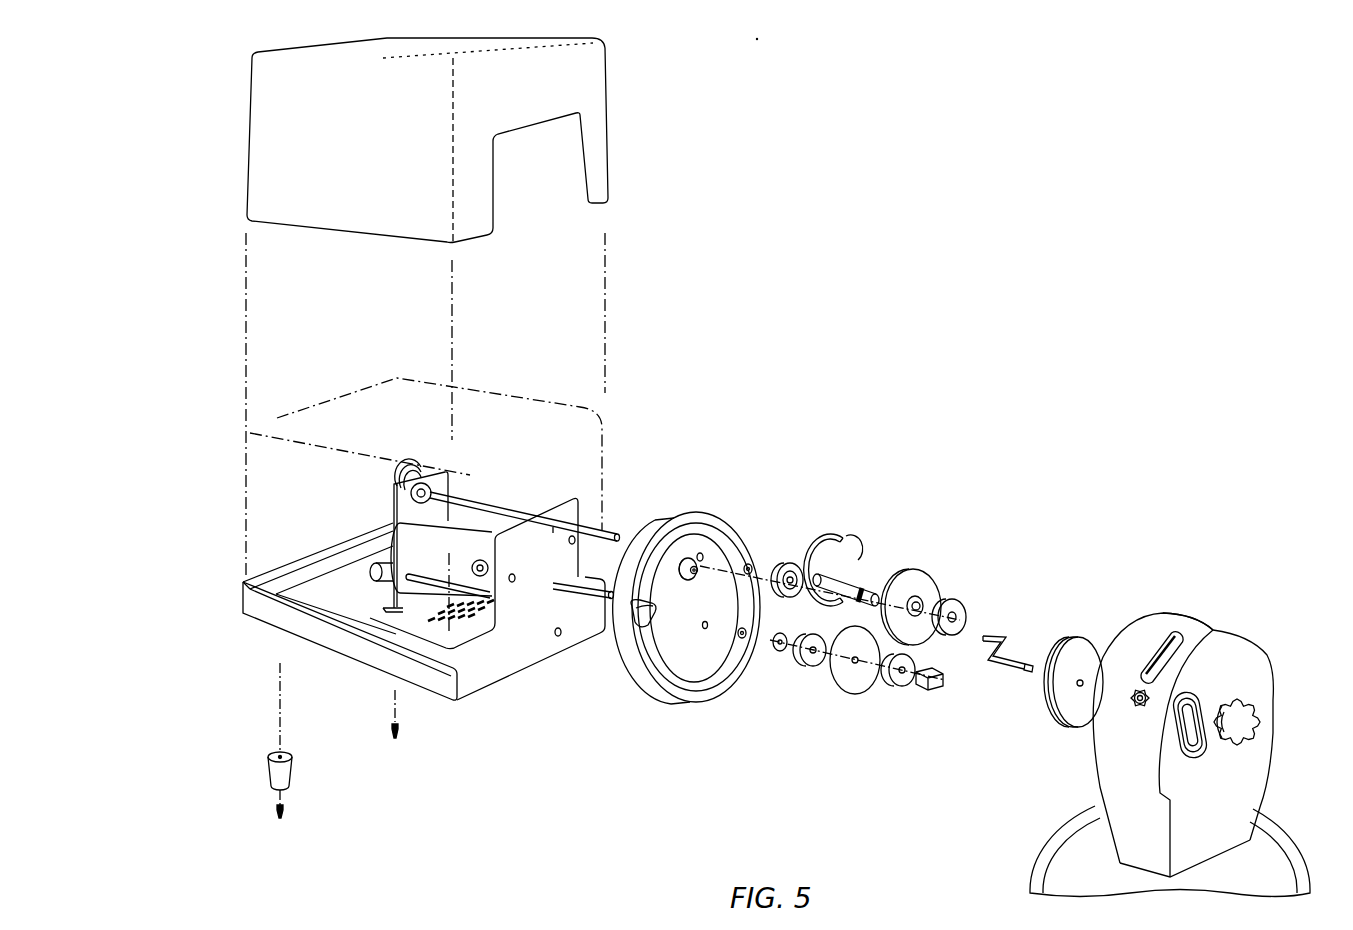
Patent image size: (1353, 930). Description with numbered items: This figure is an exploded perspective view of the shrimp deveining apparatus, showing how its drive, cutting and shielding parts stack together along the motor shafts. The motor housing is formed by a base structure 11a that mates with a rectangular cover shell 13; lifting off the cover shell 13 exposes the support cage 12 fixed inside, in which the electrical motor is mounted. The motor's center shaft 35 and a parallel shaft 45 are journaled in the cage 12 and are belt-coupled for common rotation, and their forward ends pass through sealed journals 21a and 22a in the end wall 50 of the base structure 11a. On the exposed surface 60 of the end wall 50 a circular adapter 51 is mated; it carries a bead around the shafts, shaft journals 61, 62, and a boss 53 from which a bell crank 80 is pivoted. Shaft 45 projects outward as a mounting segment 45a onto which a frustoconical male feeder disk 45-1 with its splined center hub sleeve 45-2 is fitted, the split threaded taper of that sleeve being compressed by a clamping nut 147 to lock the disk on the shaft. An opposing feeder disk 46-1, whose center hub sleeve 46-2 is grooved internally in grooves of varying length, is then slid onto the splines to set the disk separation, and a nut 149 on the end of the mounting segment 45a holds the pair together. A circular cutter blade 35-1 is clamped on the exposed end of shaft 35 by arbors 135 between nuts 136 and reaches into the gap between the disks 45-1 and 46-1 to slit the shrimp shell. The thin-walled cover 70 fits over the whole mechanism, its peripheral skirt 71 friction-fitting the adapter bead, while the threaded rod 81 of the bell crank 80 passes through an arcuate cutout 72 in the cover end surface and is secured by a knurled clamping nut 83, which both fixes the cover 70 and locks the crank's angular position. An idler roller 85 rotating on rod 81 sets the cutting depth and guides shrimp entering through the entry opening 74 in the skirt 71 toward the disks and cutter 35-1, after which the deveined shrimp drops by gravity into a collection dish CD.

The cover shell 13 is at (602, 120).
The support cage 12 is at (392, 520).
The shaft 45 is at (478, 500).
The mounting segment 45a is at (600, 528).
The sealed journal 22a is at (557, 512).
The sealed journal 21a is at (558, 578).
The center shaft 35 is at (570, 590).
The end wall 50 is at (520, 662).
The exposed surface 60 is at (487, 665).
The base structure 11a is at (342, 662).
The circular adapter 51 is at (668, 708).
The boss 53 is at (690, 565).
The shaft journal 62 is at (702, 555).
The shaft journal 61 is at (703, 628).
The clamping nut 147 is at (784, 565).
The male feeder disk 45-1 is at (835, 547).
The center hub sleeve 45-2 is at (847, 562).
The opposing feeder disk 46-1 is at (913, 570).
The center hub sleeve 46-2 is at (917, 600).
The nut 149 is at (957, 600).
The nuts 136 is at (780, 652).
The arbors 135 is at (812, 667).
The circular cutter blade 35-1 is at (855, 695).
The bell crank 80 is at (992, 636).
The threaded rod 81 is at (1020, 673).
The idler roller 85 is at (1077, 637).
The cover 70 is at (1213, 772).
The peripheral skirt 71 is at (1193, 620).
The entry opening 74 is at (1173, 630).
The arcuate cutout 72 is at (1198, 713).
The knurled clamping nut 83 is at (1257, 710).
The collection dish CD is at (1300, 860).